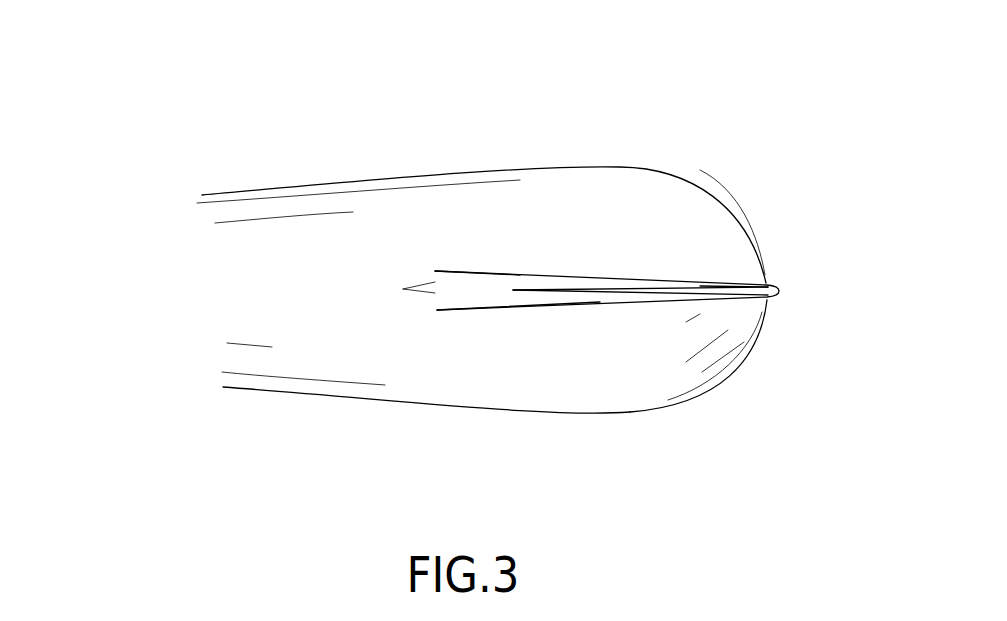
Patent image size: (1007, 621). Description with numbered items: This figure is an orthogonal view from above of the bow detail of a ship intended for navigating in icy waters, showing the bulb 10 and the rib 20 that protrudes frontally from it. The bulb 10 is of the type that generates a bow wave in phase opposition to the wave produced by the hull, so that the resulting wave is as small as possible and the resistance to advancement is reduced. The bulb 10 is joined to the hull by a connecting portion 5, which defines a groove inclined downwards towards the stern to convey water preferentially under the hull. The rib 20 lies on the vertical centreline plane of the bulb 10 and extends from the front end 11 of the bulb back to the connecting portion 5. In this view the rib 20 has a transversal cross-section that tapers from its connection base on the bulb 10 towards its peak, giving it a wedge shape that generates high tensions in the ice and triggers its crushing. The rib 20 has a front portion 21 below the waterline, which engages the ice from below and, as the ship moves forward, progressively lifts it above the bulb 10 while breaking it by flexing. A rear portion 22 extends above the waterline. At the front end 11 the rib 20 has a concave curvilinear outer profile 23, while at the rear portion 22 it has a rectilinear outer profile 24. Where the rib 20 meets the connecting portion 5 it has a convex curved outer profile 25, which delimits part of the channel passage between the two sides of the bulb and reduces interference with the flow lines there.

The connecting portion 5 is at (233, 293).
The bulb 10 is at (652, 130).
The front end of the bulb 11 is at (757, 275).
The rib 20 is at (781, 289).
The front portion of the rib 21 is at (771, 303).
The rear portion of the rib 22 is at (511, 315).
The concave curvilinear outer profile 23 is at (728, 287).
The rectilinear outer profile 24 is at (567, 287).
The convex curved outer profile 25 is at (468, 293).